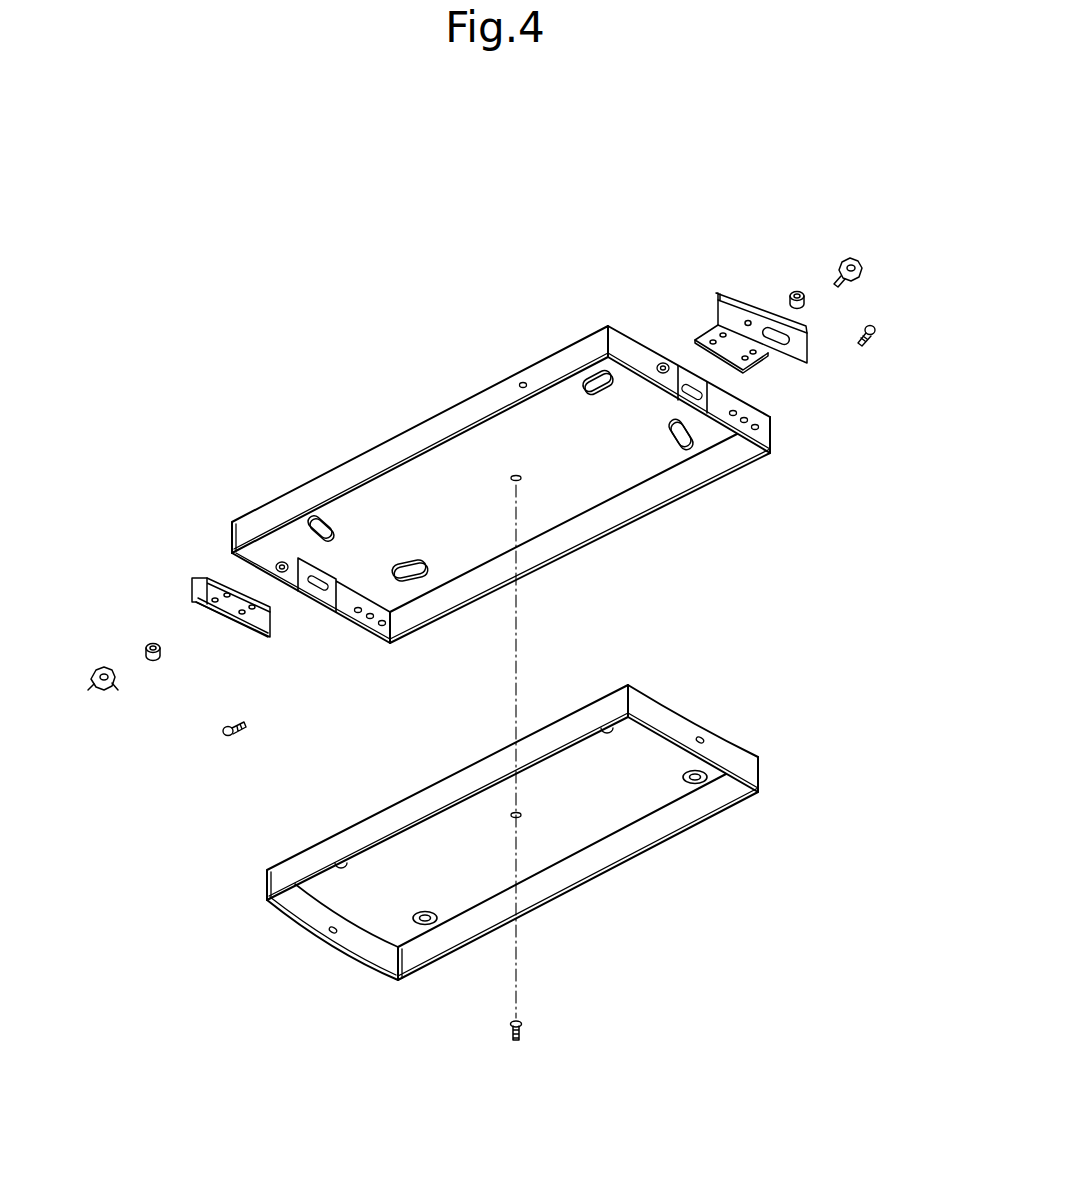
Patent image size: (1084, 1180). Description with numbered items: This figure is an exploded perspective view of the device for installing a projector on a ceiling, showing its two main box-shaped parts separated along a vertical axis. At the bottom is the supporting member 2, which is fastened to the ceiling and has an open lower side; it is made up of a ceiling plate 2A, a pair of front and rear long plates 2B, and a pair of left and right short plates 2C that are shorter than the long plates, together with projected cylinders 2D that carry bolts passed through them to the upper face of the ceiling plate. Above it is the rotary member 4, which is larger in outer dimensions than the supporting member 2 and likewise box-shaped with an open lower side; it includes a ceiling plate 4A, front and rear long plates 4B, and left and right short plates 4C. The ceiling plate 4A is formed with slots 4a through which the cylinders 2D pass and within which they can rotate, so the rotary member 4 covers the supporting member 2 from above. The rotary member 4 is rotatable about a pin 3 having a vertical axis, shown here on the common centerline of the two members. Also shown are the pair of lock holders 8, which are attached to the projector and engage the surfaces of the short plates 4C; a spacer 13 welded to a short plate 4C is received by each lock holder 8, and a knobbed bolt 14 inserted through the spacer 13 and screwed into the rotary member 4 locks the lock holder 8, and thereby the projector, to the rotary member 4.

The supporting member 2 is at (663, 693).
The ceiling plate 2A is at (603, 833).
The front and rear long plates 2B is at (452, 787).
The left and right short plates 2C is at (747, 760).
The projected cylinders 2D is at (693, 790).
The pin 3 is at (530, 1030).
The rotary member 4 is at (687, 507).
The ceiling plate 4A is at (565, 497).
The front and rear long plates 4B is at (414, 440).
The left and right short plates 4C is at (634, 347).
The slots 4a is at (693, 437).
The lock holders 8 is at (806, 338).
The spacer 13 is at (793, 272).
The knobbed bolts 14 is at (868, 270).